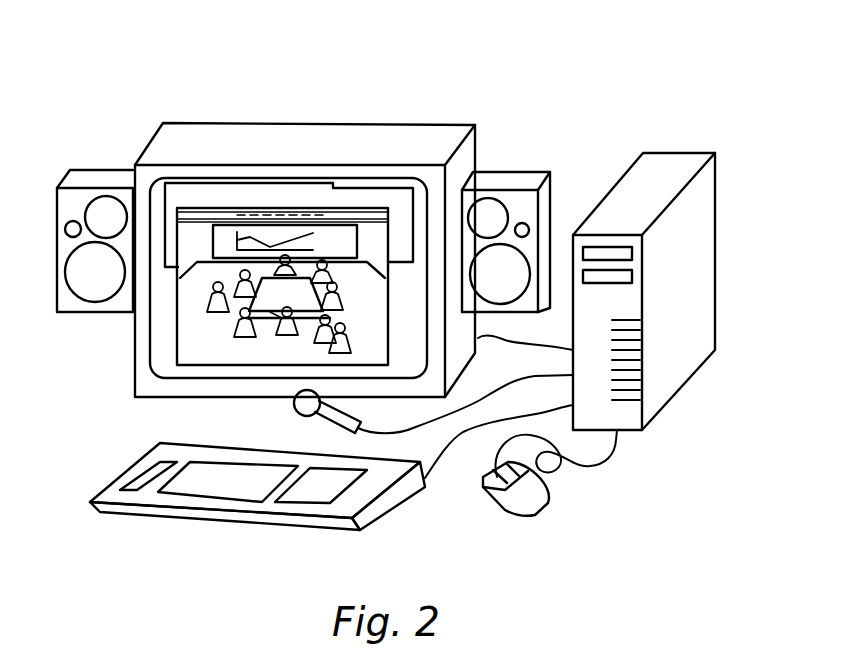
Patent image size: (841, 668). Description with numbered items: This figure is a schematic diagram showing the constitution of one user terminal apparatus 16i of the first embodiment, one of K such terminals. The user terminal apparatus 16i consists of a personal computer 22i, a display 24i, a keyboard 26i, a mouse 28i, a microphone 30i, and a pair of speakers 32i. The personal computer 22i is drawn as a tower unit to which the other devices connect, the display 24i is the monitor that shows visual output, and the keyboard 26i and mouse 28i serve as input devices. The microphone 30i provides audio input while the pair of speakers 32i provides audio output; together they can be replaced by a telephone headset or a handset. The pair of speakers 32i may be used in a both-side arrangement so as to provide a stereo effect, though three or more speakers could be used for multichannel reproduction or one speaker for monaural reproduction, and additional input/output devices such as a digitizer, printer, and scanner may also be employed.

The user terminal apparatus 16i is at (270, 47).
The personal computer 22i is at (672, 153).
The display 24i is at (409, 124).
The keyboard 26i is at (252, 524).
The mouse 28i is at (547, 507).
The microphone 30i is at (316, 421).
The pair of speakers 32i is at (107, 170).